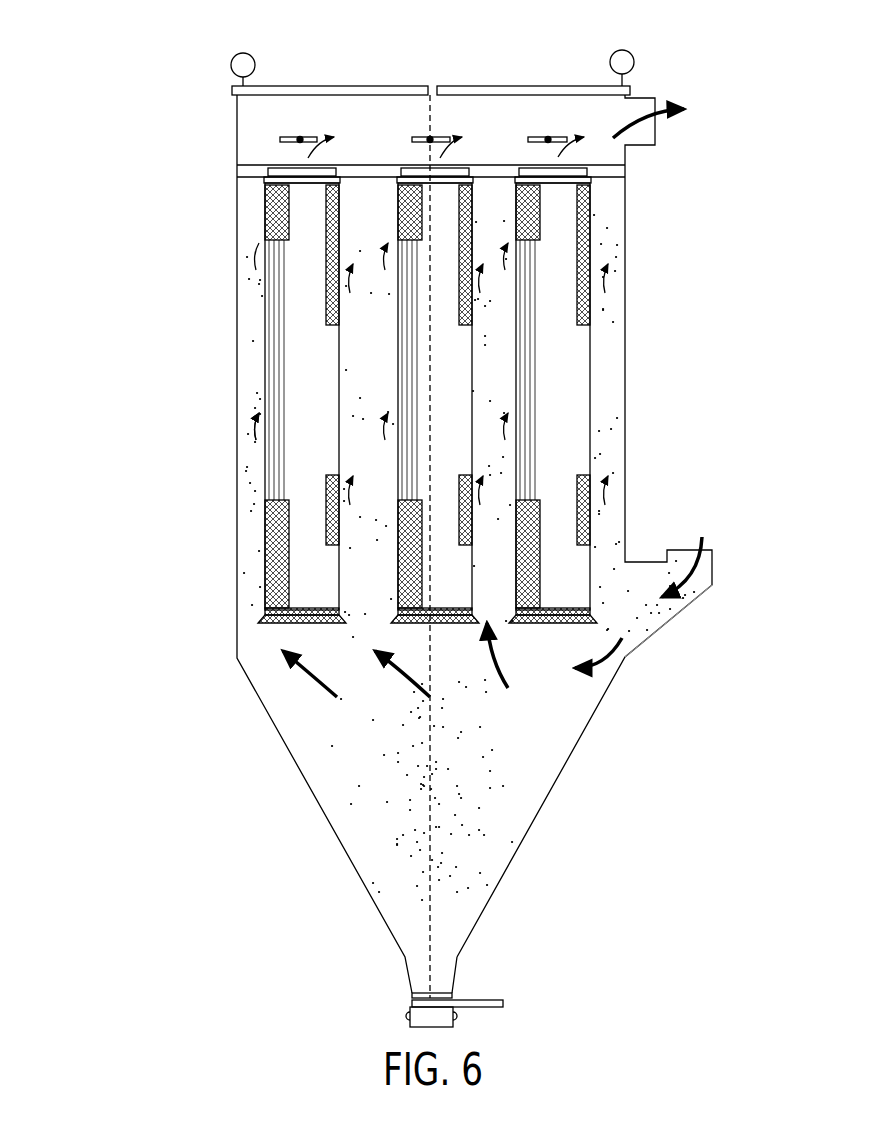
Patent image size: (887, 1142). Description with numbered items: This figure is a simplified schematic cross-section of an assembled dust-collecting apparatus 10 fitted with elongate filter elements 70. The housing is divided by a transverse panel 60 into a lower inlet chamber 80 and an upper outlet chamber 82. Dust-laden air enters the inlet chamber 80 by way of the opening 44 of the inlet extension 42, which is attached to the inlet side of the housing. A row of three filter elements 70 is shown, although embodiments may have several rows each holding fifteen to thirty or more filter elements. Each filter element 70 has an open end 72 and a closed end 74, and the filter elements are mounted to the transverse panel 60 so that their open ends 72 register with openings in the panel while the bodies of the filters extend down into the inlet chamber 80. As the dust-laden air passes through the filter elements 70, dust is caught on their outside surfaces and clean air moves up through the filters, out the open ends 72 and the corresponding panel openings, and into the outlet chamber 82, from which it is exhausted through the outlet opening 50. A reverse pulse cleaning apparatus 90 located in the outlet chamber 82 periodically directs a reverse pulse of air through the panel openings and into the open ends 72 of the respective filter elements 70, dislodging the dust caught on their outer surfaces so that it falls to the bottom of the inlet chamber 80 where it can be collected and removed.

The dust-collecting apparatus 10 is at (134, 62).
The inlet extension 42 is at (668, 622).
The opening of the inlet extension 44 is at (677, 548).
The outlet opening 50 is at (655, 127).
The transverse panel 60 is at (252, 175).
The elongate filter element 70 is at (305, 465).
The open end 72 is at (287, 167).
The closed end 74 is at (280, 623).
The inlet chamber 80 is at (548, 768).
The outlet chamber 82 is at (482, 114).
The reverse pulse cleaning apparatus 90 is at (420, 137).